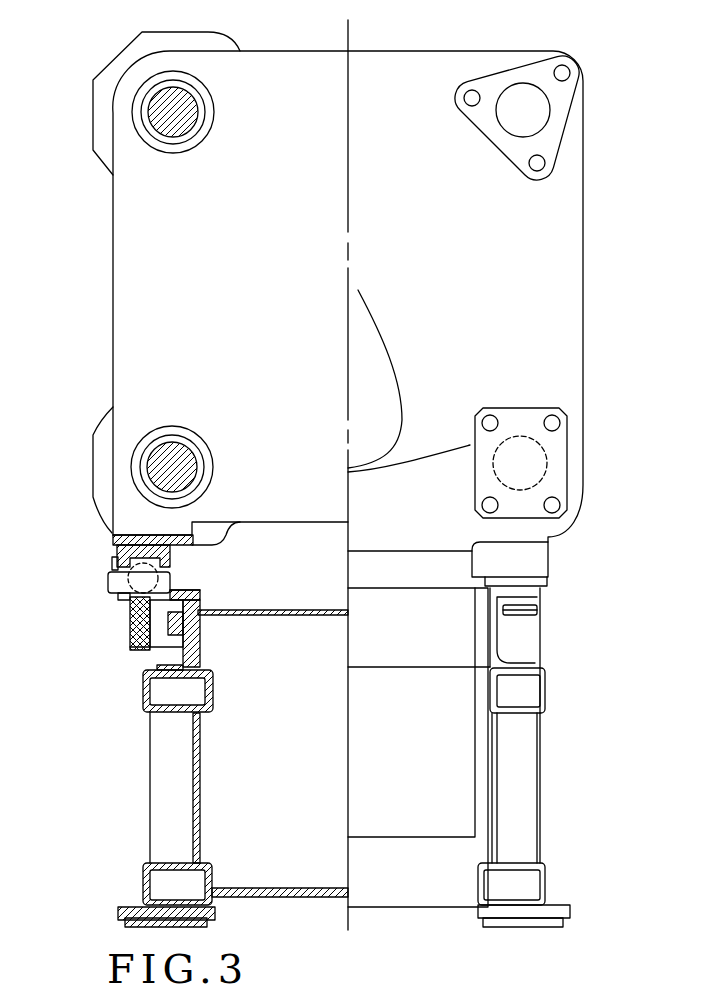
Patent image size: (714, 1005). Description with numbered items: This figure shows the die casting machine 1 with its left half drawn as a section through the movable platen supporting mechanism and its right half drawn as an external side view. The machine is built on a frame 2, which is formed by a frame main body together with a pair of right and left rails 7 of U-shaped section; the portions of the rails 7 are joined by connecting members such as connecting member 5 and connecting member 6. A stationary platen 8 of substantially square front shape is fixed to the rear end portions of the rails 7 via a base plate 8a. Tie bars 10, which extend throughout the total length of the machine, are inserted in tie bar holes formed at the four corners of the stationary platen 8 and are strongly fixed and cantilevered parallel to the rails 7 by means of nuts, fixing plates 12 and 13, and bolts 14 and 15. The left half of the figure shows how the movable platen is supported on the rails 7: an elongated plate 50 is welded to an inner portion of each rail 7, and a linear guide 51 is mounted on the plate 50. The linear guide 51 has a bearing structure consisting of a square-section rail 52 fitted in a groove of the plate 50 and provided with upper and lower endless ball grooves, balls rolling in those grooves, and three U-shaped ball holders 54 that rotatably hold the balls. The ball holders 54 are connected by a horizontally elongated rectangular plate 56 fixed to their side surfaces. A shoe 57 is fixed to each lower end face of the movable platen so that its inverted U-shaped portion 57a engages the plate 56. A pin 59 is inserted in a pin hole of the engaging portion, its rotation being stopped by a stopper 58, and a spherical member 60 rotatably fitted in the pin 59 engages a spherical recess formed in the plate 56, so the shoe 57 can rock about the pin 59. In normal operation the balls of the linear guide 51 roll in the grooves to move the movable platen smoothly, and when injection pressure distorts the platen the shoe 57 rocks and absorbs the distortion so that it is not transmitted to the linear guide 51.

The die casting machine 1 is at (592, 62).
The frame 2 is at (551, 628).
The connecting member 5 is at (402, 670).
The connecting member 6 is at (290, 610).
The rail 7 is at (199, 600).
The stationary platen 8 is at (588, 210).
The base plate 8a is at (535, 562).
The tie bar 10 is at (205, 106).
The fixing plate 12 is at (558, 128).
The fixing plate 13 is at (567, 478).
The bolt 14 is at (556, 68).
The bolt 15 is at (545, 410).
The elongated plate 50 is at (191, 651).
The linear guide 51 is at (182, 593).
The rail 52 is at (181, 622).
The ball holder 54 is at (129, 648).
The plate 56 is at (131, 637).
The shoe 57 is at (112, 553).
The inverted U-shaped portion 57a is at (183, 543).
The stopper 58 is at (112, 562).
The pin 59 is at (108, 588).
The spherical member 60 is at (130, 615).